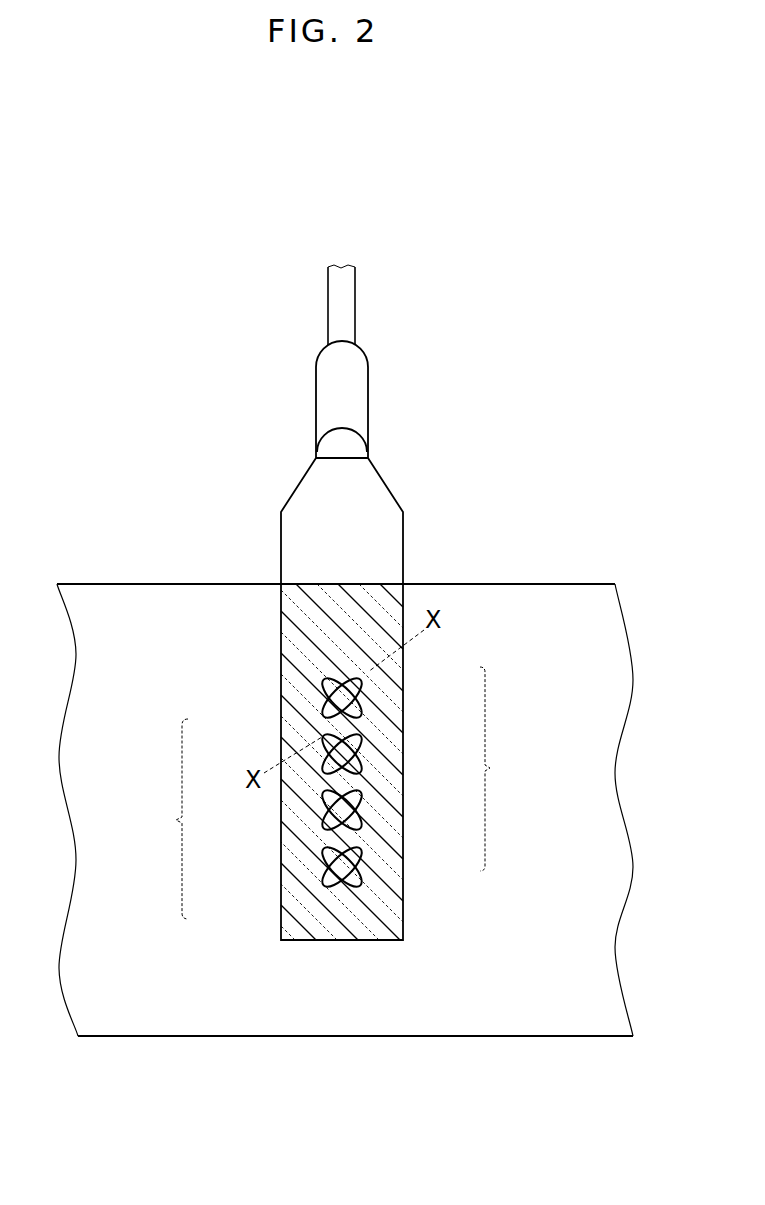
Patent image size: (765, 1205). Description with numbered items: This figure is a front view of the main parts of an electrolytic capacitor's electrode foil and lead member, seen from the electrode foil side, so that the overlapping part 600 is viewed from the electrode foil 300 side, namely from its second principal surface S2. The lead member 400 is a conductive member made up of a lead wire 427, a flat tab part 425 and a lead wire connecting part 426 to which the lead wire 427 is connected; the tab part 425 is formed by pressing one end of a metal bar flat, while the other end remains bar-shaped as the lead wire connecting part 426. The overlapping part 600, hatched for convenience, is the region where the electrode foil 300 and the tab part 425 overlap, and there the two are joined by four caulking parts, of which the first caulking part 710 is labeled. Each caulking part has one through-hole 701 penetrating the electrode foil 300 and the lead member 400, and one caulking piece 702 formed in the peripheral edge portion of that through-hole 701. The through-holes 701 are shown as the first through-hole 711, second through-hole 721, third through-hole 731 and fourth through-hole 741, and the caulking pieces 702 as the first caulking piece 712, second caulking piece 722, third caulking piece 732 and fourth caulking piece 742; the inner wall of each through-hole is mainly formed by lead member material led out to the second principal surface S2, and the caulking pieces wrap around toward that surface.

The electrode foil 300 is at (182, 1060).
The second principal surface S2 is at (565, 616).
The lead member 400 is at (398, 600).
The tab part 425 is at (367, 492).
The lead wire connecting part 426 is at (353, 398).
The lead wire 427 is at (346, 300).
The overlapping part 600 is at (279, 619).
The first caulking part 710 is at (334, 697).
The first through-hole 711 is at (364, 710).
The first caulking piece 712 is at (318, 708).
The second through-hole 721 is at (364, 766).
The second caulking piece 722 is at (318, 765).
The third through-hole 731 is at (364, 822).
The third caulking piece 732 is at (318, 822).
The fourth through-hole 741 is at (364, 878).
The fourth caulking piece 742 is at (318, 878).
The through-hole 701 is at (506, 769).
The caulking piece 702 is at (162, 819).